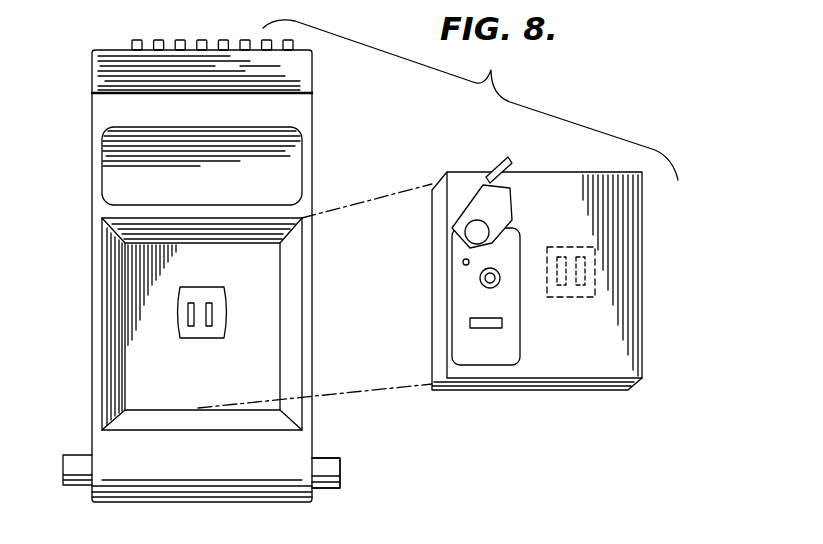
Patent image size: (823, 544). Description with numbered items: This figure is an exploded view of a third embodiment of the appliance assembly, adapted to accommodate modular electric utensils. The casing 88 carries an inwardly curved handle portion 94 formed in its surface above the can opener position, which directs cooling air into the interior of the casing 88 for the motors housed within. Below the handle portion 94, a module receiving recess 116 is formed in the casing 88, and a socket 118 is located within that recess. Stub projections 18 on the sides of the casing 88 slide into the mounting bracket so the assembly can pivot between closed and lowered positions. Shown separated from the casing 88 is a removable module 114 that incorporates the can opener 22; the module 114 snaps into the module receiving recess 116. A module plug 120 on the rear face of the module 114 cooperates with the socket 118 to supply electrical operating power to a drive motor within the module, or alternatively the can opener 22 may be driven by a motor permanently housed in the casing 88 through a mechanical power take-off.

The casing 88 is at (298, 452).
The inwardly curved handle portion 94 is at (285, 183).
The module receiving recess 116 is at (182, 418).
The socket 118 is at (228, 313).
The lower stub projection 18 is at (340, 478).
The removable module 114 is at (634, 213).
The can opener 22 is at (492, 345).
The module plug 120 is at (595, 268).